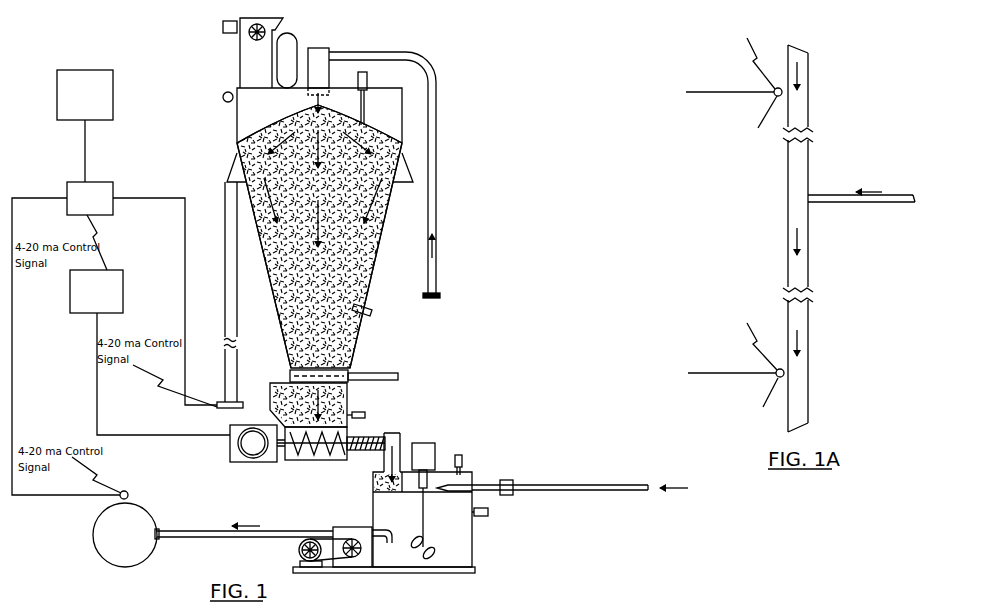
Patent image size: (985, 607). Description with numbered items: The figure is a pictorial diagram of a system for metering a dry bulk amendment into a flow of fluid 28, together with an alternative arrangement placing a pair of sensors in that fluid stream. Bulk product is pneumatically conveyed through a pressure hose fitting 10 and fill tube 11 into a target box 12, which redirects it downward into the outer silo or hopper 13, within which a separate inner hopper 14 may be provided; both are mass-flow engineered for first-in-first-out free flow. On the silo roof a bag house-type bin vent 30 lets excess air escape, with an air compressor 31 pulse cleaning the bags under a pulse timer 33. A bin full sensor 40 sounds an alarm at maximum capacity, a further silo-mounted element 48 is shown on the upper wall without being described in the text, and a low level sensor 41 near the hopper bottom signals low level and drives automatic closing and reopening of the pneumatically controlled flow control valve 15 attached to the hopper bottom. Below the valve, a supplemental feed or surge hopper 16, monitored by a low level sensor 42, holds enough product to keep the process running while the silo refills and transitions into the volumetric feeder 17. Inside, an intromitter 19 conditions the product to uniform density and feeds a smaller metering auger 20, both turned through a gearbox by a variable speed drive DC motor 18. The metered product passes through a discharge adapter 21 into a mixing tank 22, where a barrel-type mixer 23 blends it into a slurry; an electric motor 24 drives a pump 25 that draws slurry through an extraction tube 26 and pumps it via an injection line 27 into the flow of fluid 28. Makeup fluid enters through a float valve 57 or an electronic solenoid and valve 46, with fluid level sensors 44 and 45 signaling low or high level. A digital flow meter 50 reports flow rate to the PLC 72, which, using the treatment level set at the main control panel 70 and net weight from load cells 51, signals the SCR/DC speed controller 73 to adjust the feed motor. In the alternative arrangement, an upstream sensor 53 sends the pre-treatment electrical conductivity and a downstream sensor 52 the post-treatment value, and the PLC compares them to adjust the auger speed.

In FIG. 1, the pressure hose fitting 10 is at (441, 294).
In FIG. 1, the fill tube 11 is at (440, 141).
In FIG. 1, the target box 12 is at (322, 48).
In FIG. 1, the outer silo or hopper 13 is at (385, 212).
In FIG. 1, the inner hopper 14 is at (355, 226).
In FIG. 1, the flow control valve 15 is at (332, 377).
In FIG. 1, the supplemental feed or surge hopper 16 is at (270, 392).
In FIG. 1, the volumetric feeder 17 is at (303, 460).
In FIG. 1, the variable speed drive DC motor 18 is at (230, 450).
In FIG. 1, the intromitter 19 is at (317, 452).
In FIG. 1, the metering auger 20 is at (373, 436).
In FIG. 1, the discharge adapter 21 is at (400, 440).
In FIG. 1, the mixing tank 22 is at (474, 551).
In FIG. 1, the barrel-type mixer 23 is at (436, 445).
In FIG. 1, the electric motor 24 is at (312, 563).
In FIG. 1, the pump 25 is at (350, 527).
In FIG. 1, the extraction tube 26 is at (382, 530).
In FIG. 1, the injection line 27 is at (192, 540).
In FIG. 1A, the injection line 27 is at (873, 205).
In FIG. 1, the flow of fluid 28 is at (95, 548).
In FIG. 1A, the flow of fluid 28 is at (787, 260).
In FIG. 1, the bin vent 30 is at (240, 55).
In FIG. 1, the air compressor 31 is at (297, 40).
In FIG. 1, the pulse timer 33 is at (223, 28).
In FIG. 1, the bin full sensor 40 is at (367, 79).
In FIG. 1, the low level sensor 41 is at (374, 310).
In FIG. 1, the low level sensor 42 is at (365, 413).
In FIG. 1, the fluid level sensor 44 is at (488, 516).
In FIG. 1, the fluid level sensor 45 is at (463, 459).
In FIG. 1, the electronic solenoid and valve 46 is at (510, 480).
In FIG. 1, the hopper sensor 48 is at (225, 101).
In FIG. 1, the digital flow meter 50 is at (128, 492).
In FIG. 1, the load cells 51 is at (218, 402).
In FIG. 1A, the EC sensor 52 is at (776, 372).
In FIG. 1A, the EC sensor 53 is at (774, 90).
In FIG. 1, the float valve 57 is at (437, 491).
In FIG. 1, the main control panel 70 is at (72, 70).
In FIG. 1, the PLC 72 is at (67, 190).
In FIG. 1, the SCR/DC speed controller 73 is at (70, 295).